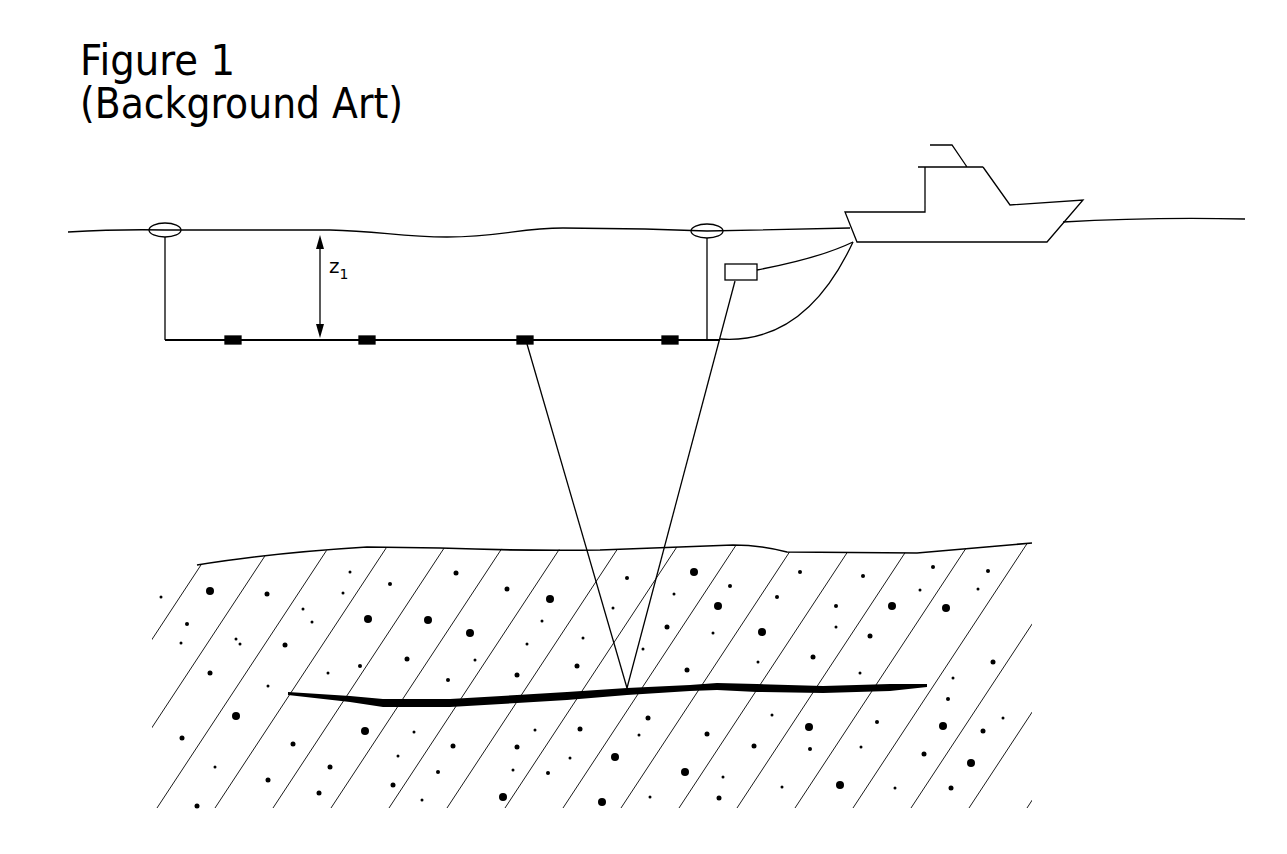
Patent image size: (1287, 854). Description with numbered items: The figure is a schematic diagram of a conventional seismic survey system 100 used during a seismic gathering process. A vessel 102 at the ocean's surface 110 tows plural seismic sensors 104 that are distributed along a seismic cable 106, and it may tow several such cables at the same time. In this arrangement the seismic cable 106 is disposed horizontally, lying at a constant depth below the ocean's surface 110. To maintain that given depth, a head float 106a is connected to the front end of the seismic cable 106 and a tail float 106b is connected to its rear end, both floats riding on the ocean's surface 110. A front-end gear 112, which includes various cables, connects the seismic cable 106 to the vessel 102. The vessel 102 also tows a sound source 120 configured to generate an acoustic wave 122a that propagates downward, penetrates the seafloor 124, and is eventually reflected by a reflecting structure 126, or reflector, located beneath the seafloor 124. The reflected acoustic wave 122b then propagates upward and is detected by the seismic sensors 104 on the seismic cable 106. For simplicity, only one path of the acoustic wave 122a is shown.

The seismic survey system 100 is at (543, 103).
The vessel 102 is at (994, 105).
The seismic sensors 104 is at (524, 345).
The seismic cable 106 is at (612, 341).
The head float 106a is at (707, 223).
The tail float 106b is at (165, 222).
The ocean's surface 110 is at (645, 230).
The front-end gear 112 is at (788, 314).
The sound source 120 is at (738, 281).
The acoustic wave 122a is at (682, 488).
The reflected acoustic wave 122b is at (567, 488).
The seafloor 124 is at (921, 552).
The reflecting structure 126 is at (897, 683).